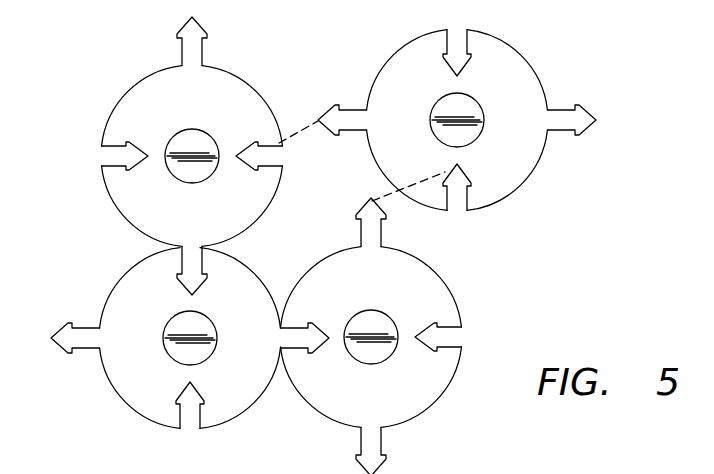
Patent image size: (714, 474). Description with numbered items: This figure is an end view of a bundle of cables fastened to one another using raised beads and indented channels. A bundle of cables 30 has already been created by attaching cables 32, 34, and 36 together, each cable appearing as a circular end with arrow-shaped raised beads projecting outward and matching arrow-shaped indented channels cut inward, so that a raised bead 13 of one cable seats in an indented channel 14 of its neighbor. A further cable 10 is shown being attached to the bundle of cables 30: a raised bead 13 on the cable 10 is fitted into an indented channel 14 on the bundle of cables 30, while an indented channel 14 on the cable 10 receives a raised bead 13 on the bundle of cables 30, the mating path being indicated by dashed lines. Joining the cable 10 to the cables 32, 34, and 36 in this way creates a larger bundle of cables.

The cable 10 is at (526, 52).
The raised bead 13 is at (334, 106).
The indented channel 14 is at (288, 160).
The bundle of cables 30 is at (86, 95).
The cable 32 is at (123, 218).
The cable 34 is at (120, 398).
The cable 36 is at (432, 405).